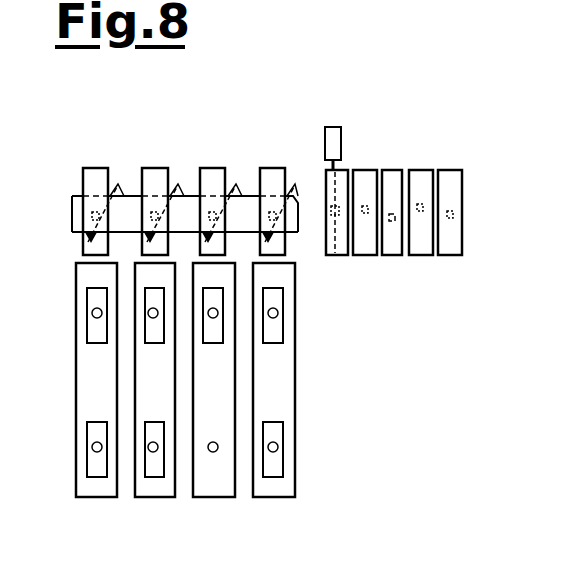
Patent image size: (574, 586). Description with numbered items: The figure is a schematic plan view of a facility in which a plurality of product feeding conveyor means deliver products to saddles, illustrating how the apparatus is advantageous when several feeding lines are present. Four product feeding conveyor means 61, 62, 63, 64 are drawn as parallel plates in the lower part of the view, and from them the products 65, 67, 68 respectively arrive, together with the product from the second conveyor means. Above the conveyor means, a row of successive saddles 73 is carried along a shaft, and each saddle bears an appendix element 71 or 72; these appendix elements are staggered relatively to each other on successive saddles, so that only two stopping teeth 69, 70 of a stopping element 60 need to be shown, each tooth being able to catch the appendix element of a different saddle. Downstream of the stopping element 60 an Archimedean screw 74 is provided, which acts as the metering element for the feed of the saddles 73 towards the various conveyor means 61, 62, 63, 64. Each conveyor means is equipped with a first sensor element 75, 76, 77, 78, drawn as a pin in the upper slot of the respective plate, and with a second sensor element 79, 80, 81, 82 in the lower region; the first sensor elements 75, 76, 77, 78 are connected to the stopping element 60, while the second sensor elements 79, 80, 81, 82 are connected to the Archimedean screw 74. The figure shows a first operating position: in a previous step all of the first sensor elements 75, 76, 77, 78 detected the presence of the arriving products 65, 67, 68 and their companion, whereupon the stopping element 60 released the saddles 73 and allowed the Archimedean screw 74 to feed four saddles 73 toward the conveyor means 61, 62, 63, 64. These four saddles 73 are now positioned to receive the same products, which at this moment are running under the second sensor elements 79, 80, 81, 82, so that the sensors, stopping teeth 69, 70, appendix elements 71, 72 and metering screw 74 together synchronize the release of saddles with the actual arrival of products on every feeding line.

The stopping element 60 is at (333, 135).
The product feeding conveyor means 61 is at (287, 410).
The product feeding conveyor means 62 is at (228, 377).
The product feeding conveyor means 63 is at (143, 368).
The product feeding conveyor means 64 is at (95, 400).
The product 65 is at (273, 468).
The product 67 is at (153, 468).
The product 68 is at (95, 470).
The stopping tooth 69 is at (335, 253).
The stopping tooth 70 is at (335, 212).
The appendix element 71 is at (210, 240).
The appendix element 72 is at (270, 205).
The saddle 73 is at (100, 178).
The Archimedean screw 74 is at (118, 184).
The first sensor element 75 is at (278, 447).
The first sensor element 76 is at (213, 452).
The first sensor element 77 is at (150, 452).
The first sensor element 78 is at (92, 447).
The second sensor element 79 is at (278, 313).
The second sensor element 80 is at (218, 313).
The second sensor element 81 is at (148, 313).
The second sensor element 82 is at (92, 313).